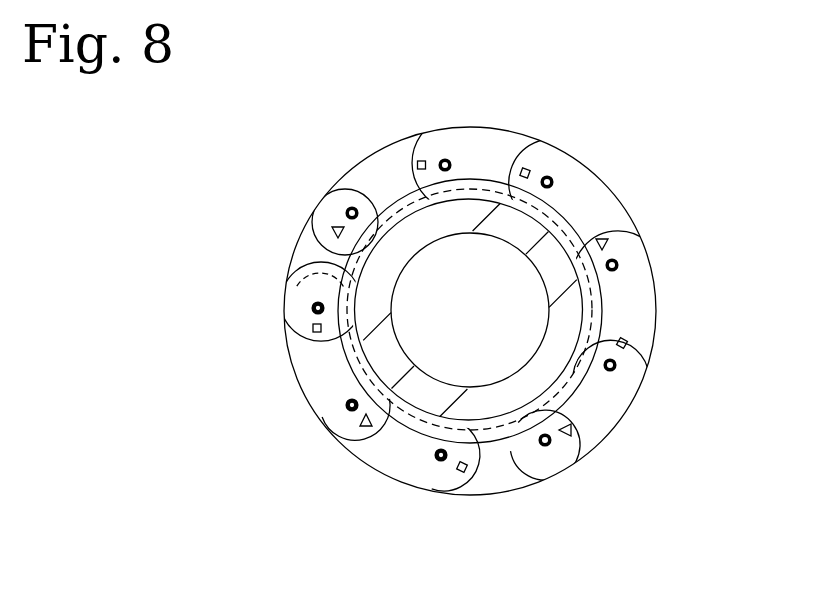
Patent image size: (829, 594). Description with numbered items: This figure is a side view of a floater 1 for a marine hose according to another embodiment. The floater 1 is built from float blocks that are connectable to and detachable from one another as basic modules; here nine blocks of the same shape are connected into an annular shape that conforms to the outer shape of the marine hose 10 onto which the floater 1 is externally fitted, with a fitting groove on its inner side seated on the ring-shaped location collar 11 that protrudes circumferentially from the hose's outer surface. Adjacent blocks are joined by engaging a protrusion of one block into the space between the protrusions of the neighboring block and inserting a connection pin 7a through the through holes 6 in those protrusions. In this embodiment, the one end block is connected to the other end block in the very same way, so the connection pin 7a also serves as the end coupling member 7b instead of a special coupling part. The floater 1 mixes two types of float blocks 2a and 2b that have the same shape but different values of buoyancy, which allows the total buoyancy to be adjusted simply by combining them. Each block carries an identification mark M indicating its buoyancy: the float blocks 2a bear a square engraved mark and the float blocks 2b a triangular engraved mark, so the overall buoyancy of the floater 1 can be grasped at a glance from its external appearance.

The floater 1 is at (604, 182).
The float block 2a is at (470, 140).
The float block 2b is at (385, 163).
The through hole 6 is at (436, 458).
The connection pin 7a is at (443, 461).
The end coupling member 7b is at (312, 308).
The marine hose 10 is at (398, 216).
The location collar 11 is at (298, 282).
The identification mark M is at (420, 160).